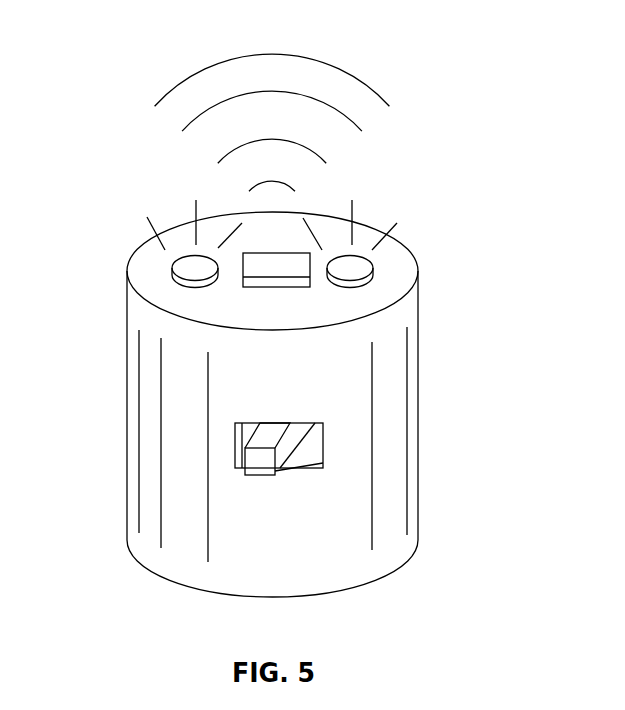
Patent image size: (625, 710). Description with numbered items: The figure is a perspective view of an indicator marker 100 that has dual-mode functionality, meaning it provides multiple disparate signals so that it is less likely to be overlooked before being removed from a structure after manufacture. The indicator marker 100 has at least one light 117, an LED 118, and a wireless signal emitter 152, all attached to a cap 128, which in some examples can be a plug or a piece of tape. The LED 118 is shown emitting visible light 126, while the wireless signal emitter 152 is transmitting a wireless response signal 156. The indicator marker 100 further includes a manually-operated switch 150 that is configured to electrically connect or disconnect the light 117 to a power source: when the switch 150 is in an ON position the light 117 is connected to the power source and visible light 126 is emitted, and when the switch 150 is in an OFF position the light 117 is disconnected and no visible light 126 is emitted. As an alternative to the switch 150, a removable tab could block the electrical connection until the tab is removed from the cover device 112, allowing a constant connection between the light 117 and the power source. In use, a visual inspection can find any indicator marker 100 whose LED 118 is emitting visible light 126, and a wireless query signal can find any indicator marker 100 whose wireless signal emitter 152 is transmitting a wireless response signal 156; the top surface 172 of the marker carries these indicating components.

The indicator marker 100 is at (307, 372).
The cover device 112 is at (421, 395).
The light 117 is at (158, 270).
The LED 118 is at (193, 268).
The visible light 126 is at (190, 210).
The cap 128 is at (148, 437).
The switch 150 is at (284, 489).
The wireless signal emitter 152 is at (272, 265).
The wireless response signal 156 is at (354, 57).
The top surface 172 is at (150, 288).